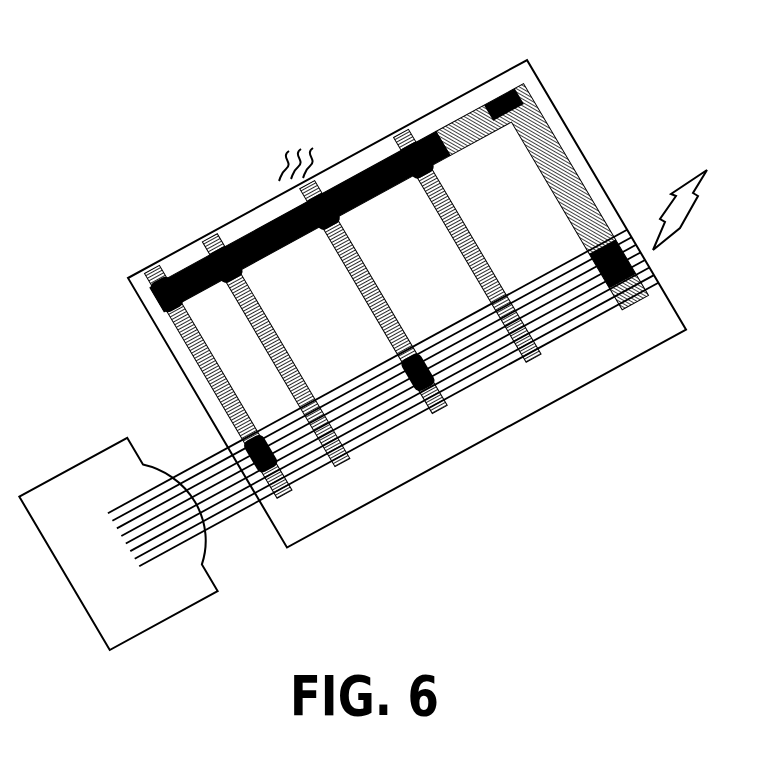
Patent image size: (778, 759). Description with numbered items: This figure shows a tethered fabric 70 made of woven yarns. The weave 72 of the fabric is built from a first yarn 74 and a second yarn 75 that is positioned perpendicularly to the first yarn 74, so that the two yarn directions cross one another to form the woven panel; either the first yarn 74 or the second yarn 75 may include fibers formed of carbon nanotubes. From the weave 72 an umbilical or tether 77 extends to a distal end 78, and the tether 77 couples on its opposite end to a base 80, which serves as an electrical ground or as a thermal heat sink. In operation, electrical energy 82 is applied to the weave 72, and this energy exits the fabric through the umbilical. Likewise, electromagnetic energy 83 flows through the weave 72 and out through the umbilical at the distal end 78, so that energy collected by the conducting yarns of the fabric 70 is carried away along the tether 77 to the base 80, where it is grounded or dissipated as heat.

The tethered fabric 70 is at (122, 126).
The weave 72 is at (489, 92).
The first yarn 74 is at (263, 253).
The second yarn 75 is at (345, 275).
The tether 77 is at (234, 541).
The distal end 78 is at (121, 570).
The base 80 is at (72, 465).
The electrical energy 82 is at (690, 194).
The electromagnetic energy 83 is at (291, 146).